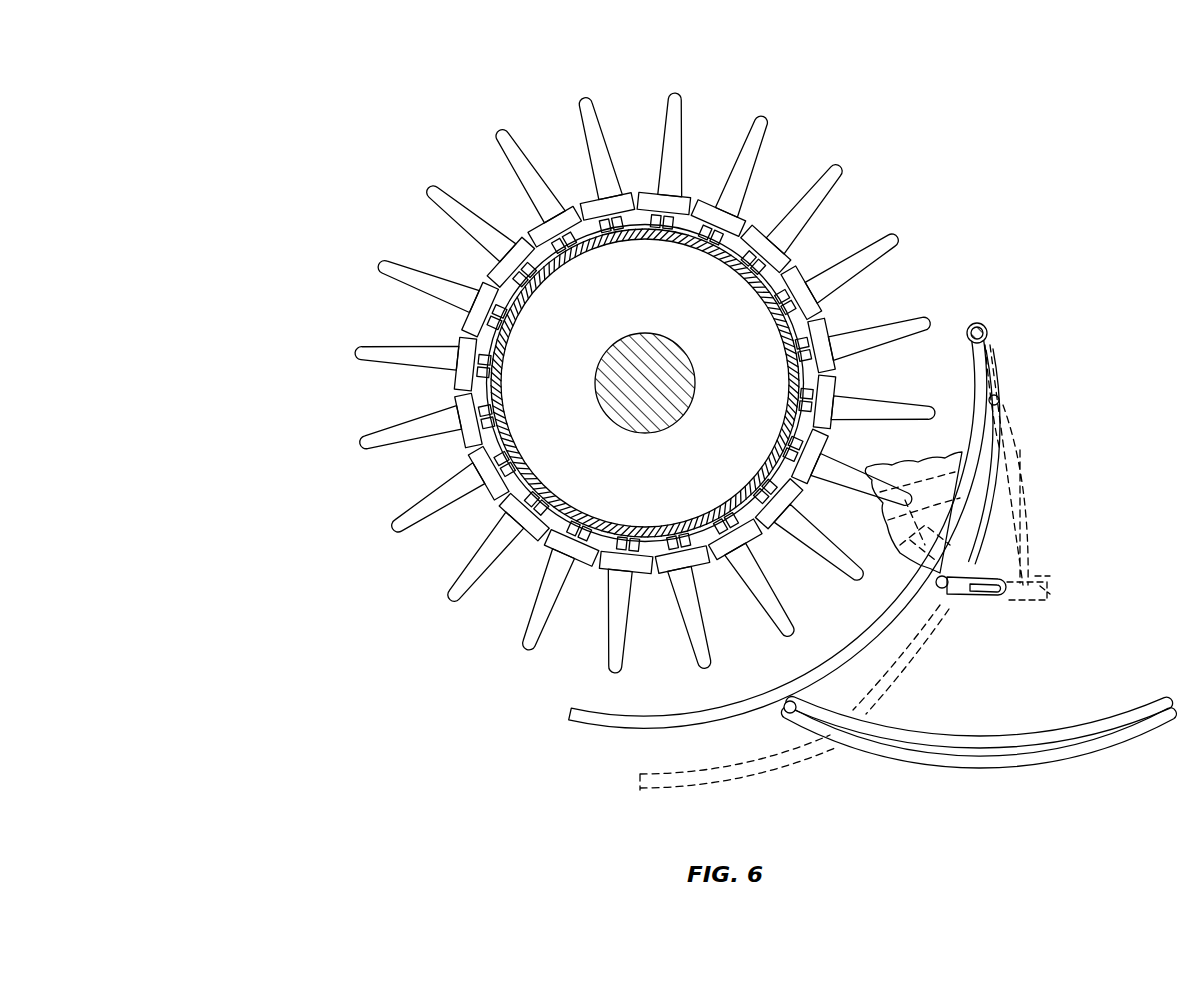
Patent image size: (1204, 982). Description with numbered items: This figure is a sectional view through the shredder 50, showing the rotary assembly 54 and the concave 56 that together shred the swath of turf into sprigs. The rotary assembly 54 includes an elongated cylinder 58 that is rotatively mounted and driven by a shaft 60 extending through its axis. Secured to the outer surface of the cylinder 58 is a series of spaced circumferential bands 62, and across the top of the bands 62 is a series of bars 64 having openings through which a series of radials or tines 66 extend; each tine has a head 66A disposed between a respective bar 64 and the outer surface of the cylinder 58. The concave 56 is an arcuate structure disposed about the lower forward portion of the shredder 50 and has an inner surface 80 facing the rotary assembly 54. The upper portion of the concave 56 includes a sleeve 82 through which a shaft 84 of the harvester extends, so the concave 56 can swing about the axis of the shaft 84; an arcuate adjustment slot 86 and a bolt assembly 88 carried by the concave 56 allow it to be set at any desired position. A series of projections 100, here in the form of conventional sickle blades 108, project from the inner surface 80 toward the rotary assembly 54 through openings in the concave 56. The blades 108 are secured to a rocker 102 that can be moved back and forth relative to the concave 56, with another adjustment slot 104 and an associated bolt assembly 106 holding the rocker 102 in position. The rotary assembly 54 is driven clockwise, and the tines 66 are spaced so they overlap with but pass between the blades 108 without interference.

The shredder 50 is at (539, 82).
The rotary assembly 54 is at (311, 392).
The concave 56 is at (577, 760).
The cylinder 58 is at (668, 235).
The shaft 60 is at (680, 373).
The circumferential bands 62 is at (772, 282).
The bars 64 is at (540, 232).
The tines 66 is at (676, 110).
The head 66A is at (803, 340).
The inner surface 80 is at (745, 707).
The sleeve 82 is at (981, 322).
The shaft 84 is at (987, 333).
The adjustment slot 86 is at (1022, 757).
The bolt assembly 88 is at (793, 714).
The projections 100 is at (957, 410).
The rocker 102 is at (995, 450).
The adjustment slot 104 is at (960, 590).
The bolt assembly 106 is at (950, 598).
The blades 108 is at (935, 465).